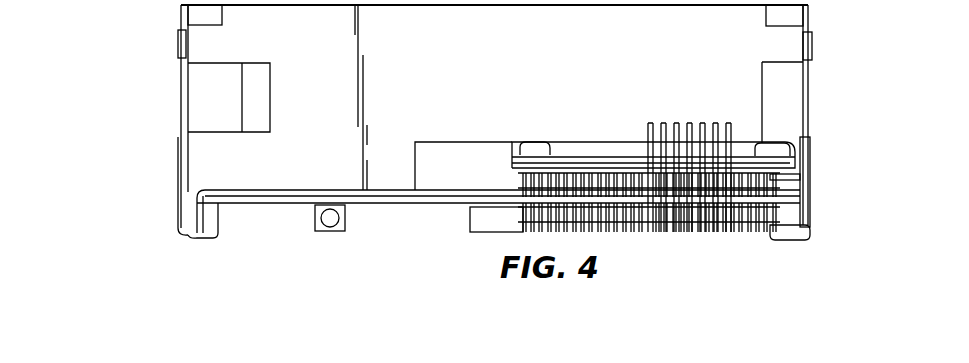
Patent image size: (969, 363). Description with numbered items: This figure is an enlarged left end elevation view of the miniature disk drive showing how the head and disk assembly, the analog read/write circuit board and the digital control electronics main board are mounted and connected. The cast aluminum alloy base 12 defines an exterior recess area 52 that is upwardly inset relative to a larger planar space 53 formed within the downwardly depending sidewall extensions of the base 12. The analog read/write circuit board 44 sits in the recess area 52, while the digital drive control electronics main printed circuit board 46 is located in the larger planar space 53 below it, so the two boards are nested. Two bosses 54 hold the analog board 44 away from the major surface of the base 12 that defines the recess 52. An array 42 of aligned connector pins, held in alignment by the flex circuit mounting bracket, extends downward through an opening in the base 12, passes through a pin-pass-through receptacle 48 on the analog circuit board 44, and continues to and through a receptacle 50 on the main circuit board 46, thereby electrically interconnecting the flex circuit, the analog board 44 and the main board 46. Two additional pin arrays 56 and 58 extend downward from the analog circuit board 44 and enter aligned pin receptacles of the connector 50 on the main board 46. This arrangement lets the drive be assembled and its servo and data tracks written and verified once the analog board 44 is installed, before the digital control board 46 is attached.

The base 12 is at (196, 235).
The array of aligned connector pins 42 is at (732, 115).
The analog read/write circuit board 44 is at (601, 162).
The digital drive control electronics main printed circuit board 46 is at (373, 204).
The pin-pass-through receptacle 48 is at (641, 178).
The receptacle 50 is at (636, 218).
The recess area 52 is at (510, 180).
The planar space 53 is at (282, 226).
The bosses 54 is at (535, 147).
The pin array 56 is at (512, 167).
The pin array 58 is at (790, 177).